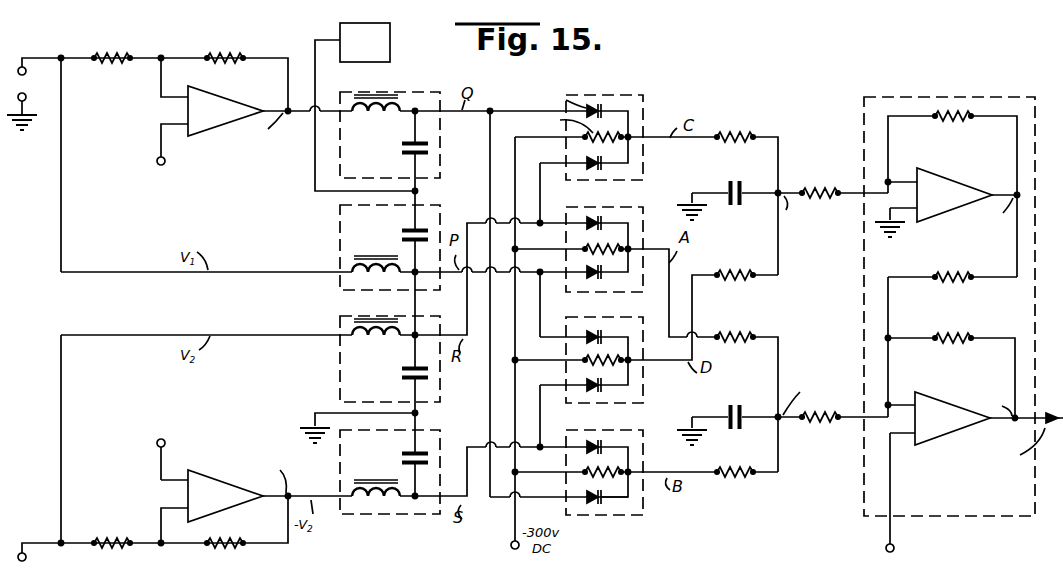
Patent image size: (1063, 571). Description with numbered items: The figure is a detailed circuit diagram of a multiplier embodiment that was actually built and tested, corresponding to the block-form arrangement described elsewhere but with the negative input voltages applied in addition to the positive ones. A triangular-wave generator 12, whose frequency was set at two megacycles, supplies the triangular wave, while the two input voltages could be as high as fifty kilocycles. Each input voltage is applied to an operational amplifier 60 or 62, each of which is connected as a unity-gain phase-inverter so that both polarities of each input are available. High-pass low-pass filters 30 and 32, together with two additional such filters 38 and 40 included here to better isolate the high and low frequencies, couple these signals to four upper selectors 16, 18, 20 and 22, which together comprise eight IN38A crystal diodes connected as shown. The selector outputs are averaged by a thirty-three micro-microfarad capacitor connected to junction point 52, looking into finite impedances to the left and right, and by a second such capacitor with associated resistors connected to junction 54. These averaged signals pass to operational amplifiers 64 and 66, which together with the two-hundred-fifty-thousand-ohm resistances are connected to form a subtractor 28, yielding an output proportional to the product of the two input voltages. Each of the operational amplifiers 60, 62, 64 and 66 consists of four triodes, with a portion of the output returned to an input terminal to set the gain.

The triangular-wave generator 12 is at (391, 36).
The upper selector 16 is at (646, 378).
The upper selector 18 is at (623, 208).
The upper selector 20 is at (617, 96).
The upper selector 22 is at (618, 519).
The subtractor 28 is at (903, 97).
The high-pass low-pass filter 30 is at (340, 236).
The high-pass low-pass filter 32 is at (405, 93).
The high-pass low-pass filter 38 is at (340, 350).
The high-pass low-pass filter 40 is at (382, 515).
The junction point 52 is at (781, 192).
The junction 54 is at (786, 420).
The operational amplifier 60 is at (221, 119).
The operational amplifier 62 is at (216, 489).
The operational amplifier 64 is at (940, 189).
The operational amplifier 66 is at (945, 413).